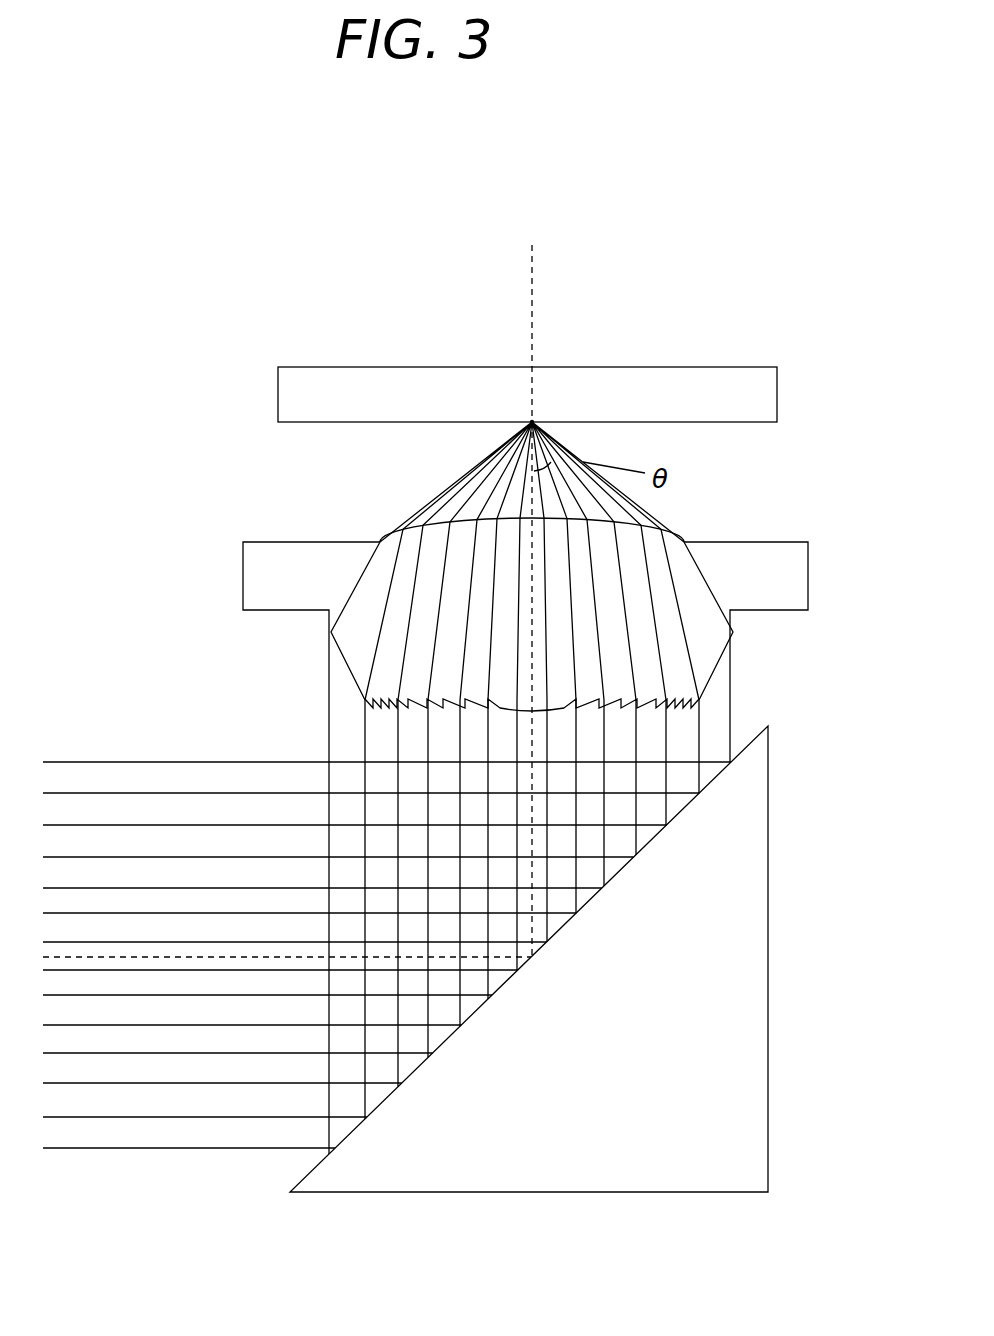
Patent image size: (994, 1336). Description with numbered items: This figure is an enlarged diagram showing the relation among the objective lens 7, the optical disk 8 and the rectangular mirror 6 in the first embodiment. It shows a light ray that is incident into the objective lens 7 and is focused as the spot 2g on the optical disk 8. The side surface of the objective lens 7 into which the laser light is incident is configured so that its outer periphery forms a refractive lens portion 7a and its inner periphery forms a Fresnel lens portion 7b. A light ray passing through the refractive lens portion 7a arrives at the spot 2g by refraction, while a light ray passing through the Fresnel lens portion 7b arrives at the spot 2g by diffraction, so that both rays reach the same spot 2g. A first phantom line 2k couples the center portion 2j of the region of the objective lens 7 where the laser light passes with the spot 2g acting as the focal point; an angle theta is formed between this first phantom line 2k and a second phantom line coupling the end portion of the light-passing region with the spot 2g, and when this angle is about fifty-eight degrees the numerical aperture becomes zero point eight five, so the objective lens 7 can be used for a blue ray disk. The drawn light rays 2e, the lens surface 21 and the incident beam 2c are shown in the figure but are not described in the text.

The optical disk 8 is at (720, 385).
The first phantom line 2k is at (533, 312).
The spot 2g is at (530, 420).
The light beam 2e is at (433, 498).
The center portion 2j is at (533, 532).
The lens surface 21 is at (655, 536).
The objective lens 7 is at (798, 575).
The refractive lens portion 7a is at (714, 676).
The Fresnel lens portion 7b is at (616, 720).
The rectangular mirror 6 is at (753, 1127).
The incident parallel light beam 2c is at (130, 1140).